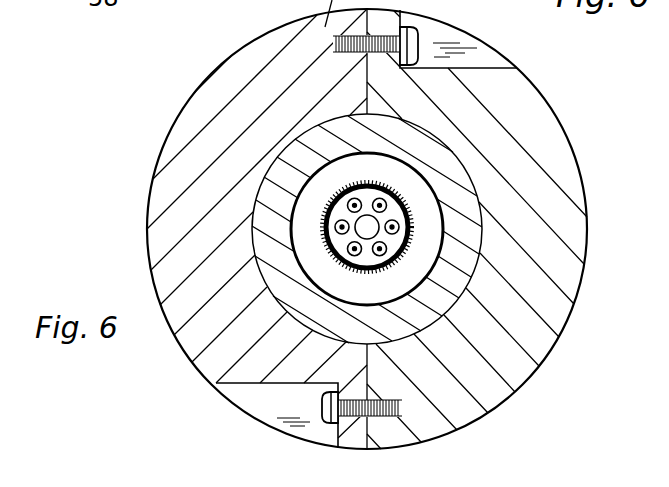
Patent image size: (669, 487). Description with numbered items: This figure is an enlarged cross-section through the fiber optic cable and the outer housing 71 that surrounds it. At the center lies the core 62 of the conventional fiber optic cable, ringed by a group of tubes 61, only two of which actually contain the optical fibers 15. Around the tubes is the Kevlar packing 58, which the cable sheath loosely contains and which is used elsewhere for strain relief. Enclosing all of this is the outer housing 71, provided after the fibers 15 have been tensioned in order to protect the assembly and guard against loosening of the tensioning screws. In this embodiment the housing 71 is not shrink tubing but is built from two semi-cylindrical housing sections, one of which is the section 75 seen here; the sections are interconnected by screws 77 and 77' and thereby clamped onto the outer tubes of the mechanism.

The outer housing 71 is at (226, 79).
The semi-cylindrical housing section 75 is at (528, 108).
The screw 77 is at (412, 32).
The clamping screw 77' is at (290, 409).
The packing 58 is at (338, 194).
The core 62 is at (374, 224).
The optical fibers 15 is at (381, 201).
The tubes 61 is at (398, 230).